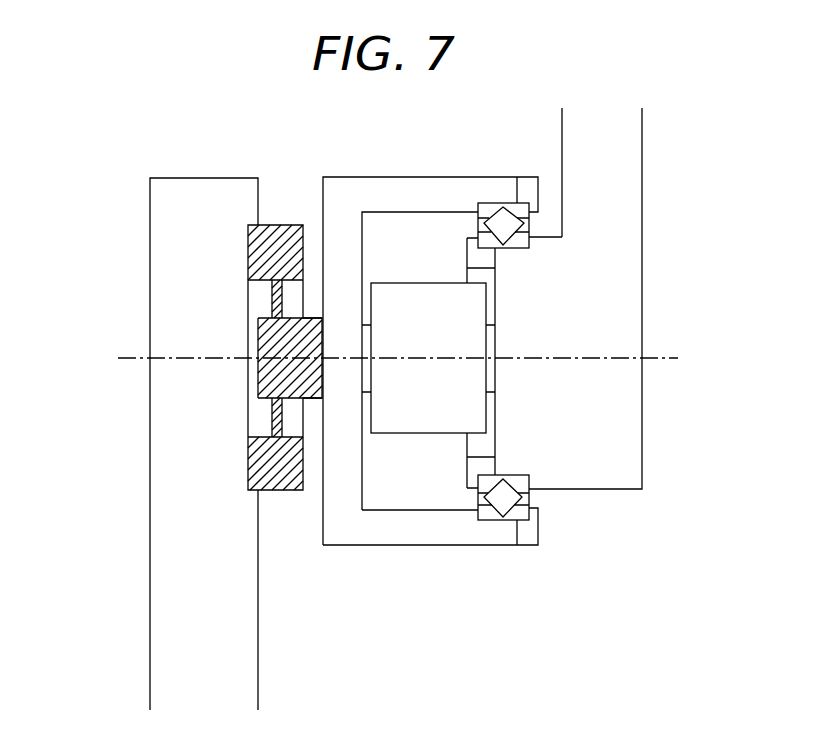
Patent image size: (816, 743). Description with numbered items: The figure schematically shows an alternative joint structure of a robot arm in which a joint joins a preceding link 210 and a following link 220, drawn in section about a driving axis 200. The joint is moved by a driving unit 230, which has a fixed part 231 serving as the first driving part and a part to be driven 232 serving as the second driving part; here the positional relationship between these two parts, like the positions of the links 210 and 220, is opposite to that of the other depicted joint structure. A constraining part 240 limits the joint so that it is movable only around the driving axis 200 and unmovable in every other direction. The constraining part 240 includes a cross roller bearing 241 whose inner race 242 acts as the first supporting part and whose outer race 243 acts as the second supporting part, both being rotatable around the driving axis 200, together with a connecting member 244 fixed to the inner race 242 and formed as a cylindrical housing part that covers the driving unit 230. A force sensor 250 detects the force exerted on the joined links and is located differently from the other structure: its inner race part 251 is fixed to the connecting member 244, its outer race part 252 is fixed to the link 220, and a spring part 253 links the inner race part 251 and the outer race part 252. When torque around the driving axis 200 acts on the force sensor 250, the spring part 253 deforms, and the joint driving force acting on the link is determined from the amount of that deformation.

The driving axis 200 is at (128, 362).
The n−1-th link 210 is at (623, 440).
The n-th link 220 is at (209, 188).
The driving unit 230 is at (533, 307).
The fixed part 231 is at (495, 340).
The part to be driven 232 is at (372, 336).
The constraining part 240 is at (450, 433).
The cross roller bearing 241 is at (525, 427).
The inner race 242 is at (527, 485).
The outer race 243 is at (492, 518).
The connecting member 244 is at (448, 530).
The force sensor 250 is at (177, 355).
The inner race part 251 is at (270, 333).
The outer race part 252 is at (255, 248).
The spring part 253 is at (273, 296).